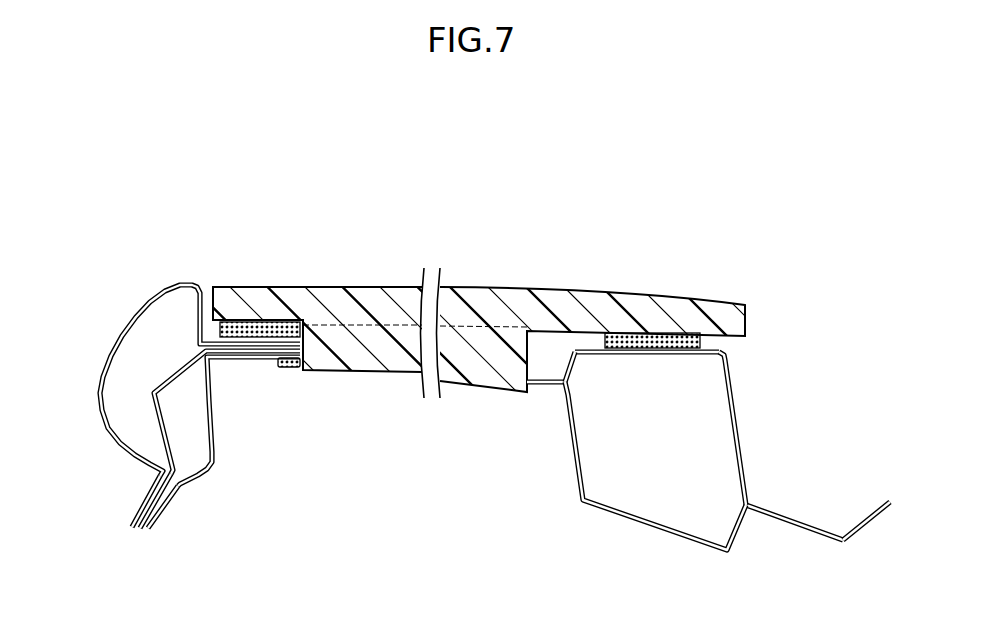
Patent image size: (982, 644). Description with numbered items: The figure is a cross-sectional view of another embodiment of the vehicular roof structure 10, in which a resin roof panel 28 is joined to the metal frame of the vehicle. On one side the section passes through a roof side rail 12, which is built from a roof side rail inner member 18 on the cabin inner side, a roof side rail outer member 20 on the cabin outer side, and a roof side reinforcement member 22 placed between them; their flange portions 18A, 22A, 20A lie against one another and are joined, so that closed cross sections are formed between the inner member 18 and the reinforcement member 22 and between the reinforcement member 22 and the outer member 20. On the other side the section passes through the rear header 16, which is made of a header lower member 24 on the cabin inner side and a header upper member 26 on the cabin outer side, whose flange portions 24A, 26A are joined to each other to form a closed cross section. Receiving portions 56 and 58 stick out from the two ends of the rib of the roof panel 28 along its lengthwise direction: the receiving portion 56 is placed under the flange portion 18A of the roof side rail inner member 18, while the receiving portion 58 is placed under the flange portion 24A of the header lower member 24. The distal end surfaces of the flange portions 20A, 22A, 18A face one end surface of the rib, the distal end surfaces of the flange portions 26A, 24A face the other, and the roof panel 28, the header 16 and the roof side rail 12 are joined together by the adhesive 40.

The vehicular roof structure 10 is at (467, 380).
The roof side rail 12 is at (207, 391).
The rear header 16 is at (666, 470).
The roof side rail inner member 18 is at (213, 440).
The flange portion 18A is at (268, 360).
The roof side rail outer member 20 is at (113, 339).
The flange portion 20A is at (283, 325).
The roof side reinforcement member 22 is at (155, 416).
The flange portion 22A is at (260, 356).
The header lower member 24 is at (578, 482).
The flange portion 24A is at (553, 387).
The header upper member 26 is at (738, 437).
The flange portion 26A is at (527, 363).
The roof panel 28 is at (480, 286).
The adhesive 40 is at (257, 322).
The receiving portion 56 is at (288, 370).
The receiving portion 58 is at (537, 393).